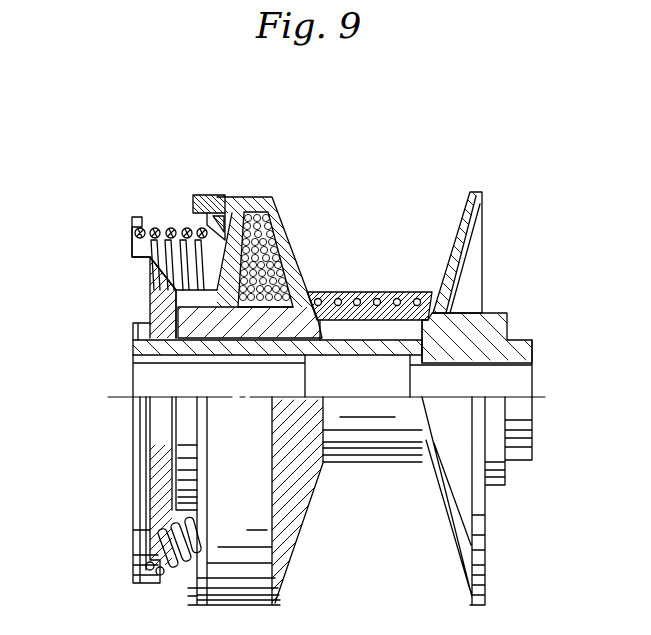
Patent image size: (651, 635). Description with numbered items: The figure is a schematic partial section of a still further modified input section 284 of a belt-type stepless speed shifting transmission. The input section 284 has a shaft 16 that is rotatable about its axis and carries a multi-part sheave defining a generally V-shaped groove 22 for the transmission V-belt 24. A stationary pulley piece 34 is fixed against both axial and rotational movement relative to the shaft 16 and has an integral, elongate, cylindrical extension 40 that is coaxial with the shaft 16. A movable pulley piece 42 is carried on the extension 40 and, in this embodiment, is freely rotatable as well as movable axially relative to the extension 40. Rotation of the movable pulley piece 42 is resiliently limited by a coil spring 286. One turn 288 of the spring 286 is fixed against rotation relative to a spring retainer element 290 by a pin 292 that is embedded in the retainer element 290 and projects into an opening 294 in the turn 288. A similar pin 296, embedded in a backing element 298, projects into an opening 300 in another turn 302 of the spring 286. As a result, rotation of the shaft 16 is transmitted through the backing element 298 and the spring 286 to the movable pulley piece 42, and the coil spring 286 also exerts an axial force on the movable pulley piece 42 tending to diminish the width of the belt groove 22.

The shaft 16 is at (145, 382).
The V-shaped groove 22 is at (370, 200).
The transmission V-belt 24 is at (362, 292).
The stationary pulley piece 34 is at (462, 206).
The cylindrical extension 40 is at (396, 350).
The movable pulley piece 42 is at (288, 250).
The input section 284 is at (522, 275).
The coil spring 286 is at (184, 228).
The turn 288 is at (200, 229).
The spring retainer element 290 is at (169, 228).
The pin 292 is at (228, 220).
The opening 294 is at (210, 252).
The pin 296 is at (136, 243).
The backing element 298 is at (140, 228).
The opening 300 is at (133, 233).
The turn 302 is at (152, 228).